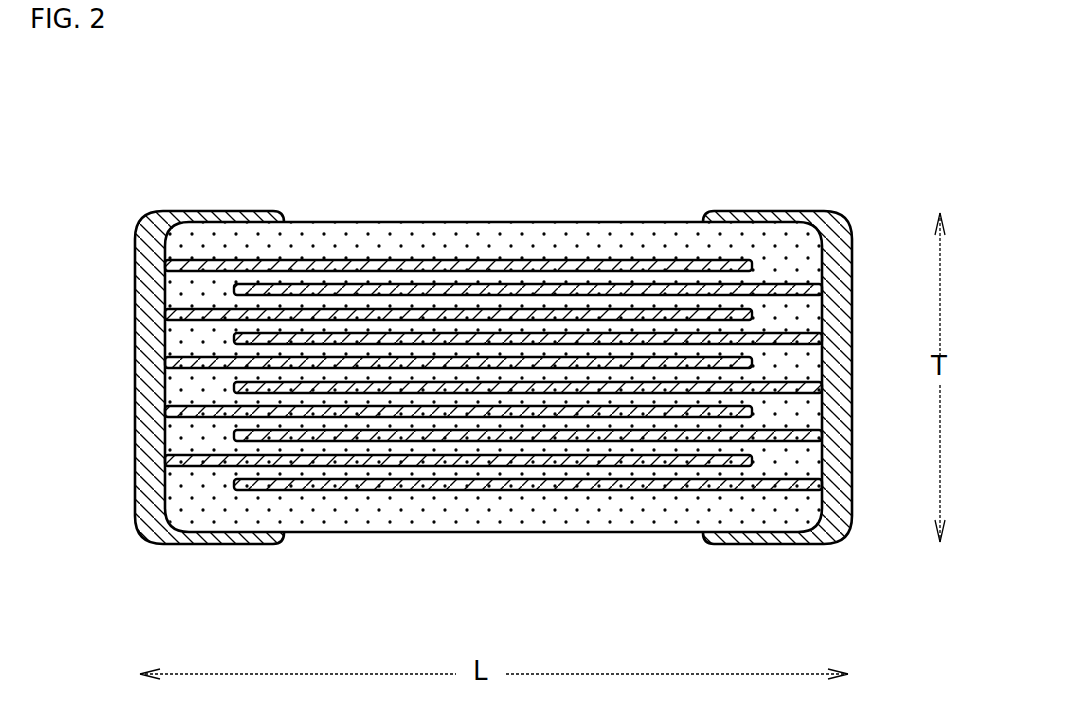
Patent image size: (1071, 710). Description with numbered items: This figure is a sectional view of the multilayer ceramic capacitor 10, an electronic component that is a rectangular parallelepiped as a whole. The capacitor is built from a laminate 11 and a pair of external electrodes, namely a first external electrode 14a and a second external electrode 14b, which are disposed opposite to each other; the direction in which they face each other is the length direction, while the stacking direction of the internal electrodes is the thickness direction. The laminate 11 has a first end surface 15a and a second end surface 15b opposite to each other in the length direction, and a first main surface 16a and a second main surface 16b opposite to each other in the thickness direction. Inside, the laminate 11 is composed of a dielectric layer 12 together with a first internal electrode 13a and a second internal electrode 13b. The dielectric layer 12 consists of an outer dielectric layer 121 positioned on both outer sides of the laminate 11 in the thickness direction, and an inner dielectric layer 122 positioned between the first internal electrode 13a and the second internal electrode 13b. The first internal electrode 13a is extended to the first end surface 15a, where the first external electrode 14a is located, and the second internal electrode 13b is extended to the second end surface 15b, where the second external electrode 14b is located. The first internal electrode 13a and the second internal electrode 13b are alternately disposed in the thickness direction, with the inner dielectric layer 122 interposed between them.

The multilayer ceramic capacitor 10 is at (735, 165).
The laminate 11 is at (670, 222).
The dielectric layer 12 is at (493, 358).
The outer dielectric layer 121 is at (394, 248).
The inner dielectric layer 122 is at (545, 308).
The first internal electrode 13a is at (620, 311).
The second internal electrode 13b is at (585, 432).
The first external electrode 14a is at (137, 353).
The second external electrode 14b is at (852, 313).
The first end surface 15a is at (161, 285).
The second end surface 15b is at (824, 268).
The first main surface 16a is at (327, 221).
The second main surface 16b is at (352, 534).